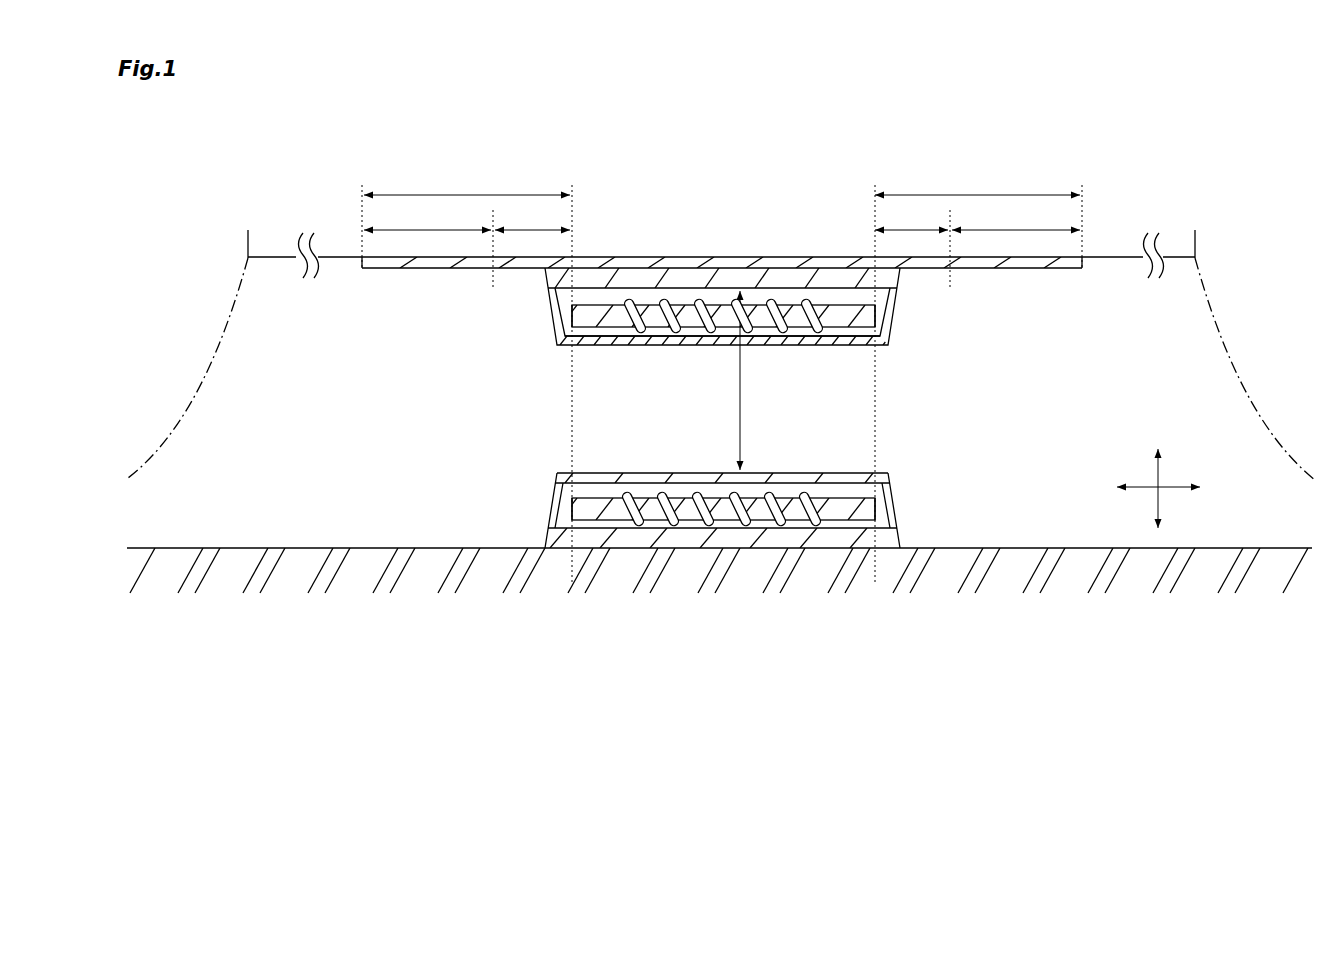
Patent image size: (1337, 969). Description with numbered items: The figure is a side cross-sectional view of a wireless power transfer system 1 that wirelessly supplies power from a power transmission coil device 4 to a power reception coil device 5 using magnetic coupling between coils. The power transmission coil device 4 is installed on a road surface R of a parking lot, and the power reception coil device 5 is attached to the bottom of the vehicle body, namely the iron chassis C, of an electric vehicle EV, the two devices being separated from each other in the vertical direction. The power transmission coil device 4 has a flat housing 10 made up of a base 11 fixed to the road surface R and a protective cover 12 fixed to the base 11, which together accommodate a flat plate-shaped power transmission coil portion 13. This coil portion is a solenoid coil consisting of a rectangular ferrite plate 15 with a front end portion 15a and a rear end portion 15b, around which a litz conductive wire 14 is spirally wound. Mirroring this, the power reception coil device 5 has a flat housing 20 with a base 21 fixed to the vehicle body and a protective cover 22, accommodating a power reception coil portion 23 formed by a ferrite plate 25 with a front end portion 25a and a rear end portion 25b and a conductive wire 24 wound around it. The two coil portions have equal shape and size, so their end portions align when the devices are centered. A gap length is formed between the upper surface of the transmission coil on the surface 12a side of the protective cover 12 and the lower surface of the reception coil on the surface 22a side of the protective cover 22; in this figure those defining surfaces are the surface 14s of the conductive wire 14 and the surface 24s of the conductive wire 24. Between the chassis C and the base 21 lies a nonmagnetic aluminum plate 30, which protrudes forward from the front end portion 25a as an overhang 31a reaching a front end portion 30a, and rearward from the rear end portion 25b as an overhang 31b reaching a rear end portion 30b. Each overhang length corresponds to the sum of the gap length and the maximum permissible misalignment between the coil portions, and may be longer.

The wireless power transfer system 1 is at (633, 156).
The power transmission coil device 4 is at (514, 498).
The power reception coil device 5 is at (514, 308).
The housing 10 is at (758, 541).
The base 11 is at (903, 542).
The protective cover 12 is at (878, 505).
The surface of protective cover 12a is at (817, 473).
The power transmission coil portion 13 is at (726, 551).
The conductive wire 14 is at (750, 528).
The surface of conductive wire 14s is at (701, 498).
The ferrite plate 15 is at (800, 521).
The front end portion of ferrite plate 15a is at (556, 480).
The rear end portion of ferrite plate 15b is at (887, 480).
The housing 20 is at (751, 288).
The base 21 is at (900, 275).
The protective cover 22 is at (892, 330).
The surface of protective cover 22a is at (664, 346).
The power reception coil portion 23 is at (717, 280).
The conductive wire 24 is at (737, 303).
The surface of conductive wire 24s is at (776, 329).
The ferrite plate 25 is at (791, 303).
The front end portion of ferrite plate 25a is at (550, 316).
The rear end portion of ferrite plate 25b is at (889, 345).
The aluminum plate 30 is at (721, 291).
The front end portion of aluminum plate 30a is at (362, 268).
The rear end portion of aluminum plate 30b is at (1082, 270).
The overhang 31a is at (417, 270).
The overhang 31b is at (1013, 270).
The chassis C is at (287, 266).
The road surface R is at (385, 548).
The electric vehicle EV is at (1190, 366).